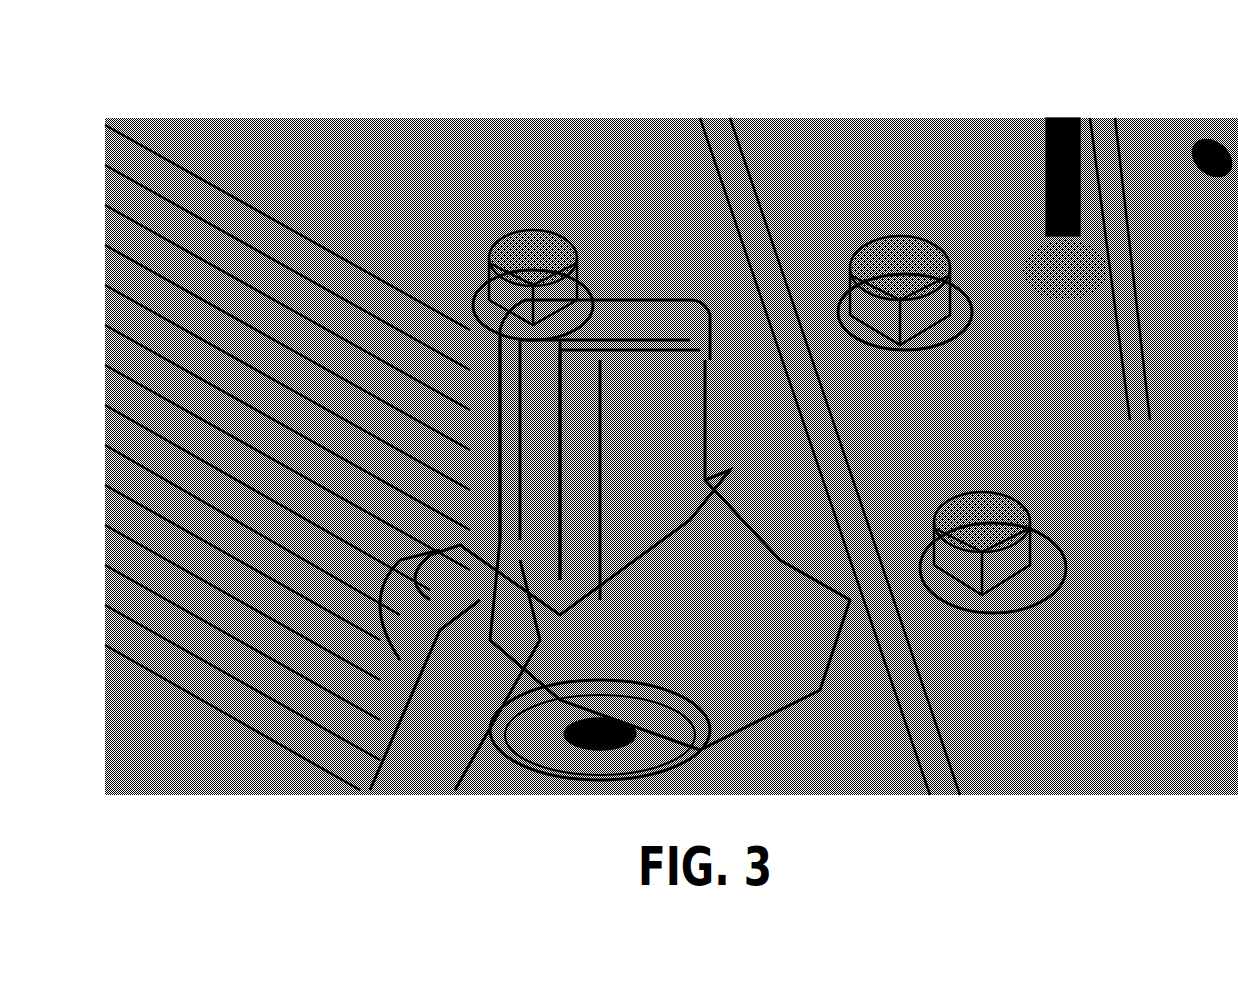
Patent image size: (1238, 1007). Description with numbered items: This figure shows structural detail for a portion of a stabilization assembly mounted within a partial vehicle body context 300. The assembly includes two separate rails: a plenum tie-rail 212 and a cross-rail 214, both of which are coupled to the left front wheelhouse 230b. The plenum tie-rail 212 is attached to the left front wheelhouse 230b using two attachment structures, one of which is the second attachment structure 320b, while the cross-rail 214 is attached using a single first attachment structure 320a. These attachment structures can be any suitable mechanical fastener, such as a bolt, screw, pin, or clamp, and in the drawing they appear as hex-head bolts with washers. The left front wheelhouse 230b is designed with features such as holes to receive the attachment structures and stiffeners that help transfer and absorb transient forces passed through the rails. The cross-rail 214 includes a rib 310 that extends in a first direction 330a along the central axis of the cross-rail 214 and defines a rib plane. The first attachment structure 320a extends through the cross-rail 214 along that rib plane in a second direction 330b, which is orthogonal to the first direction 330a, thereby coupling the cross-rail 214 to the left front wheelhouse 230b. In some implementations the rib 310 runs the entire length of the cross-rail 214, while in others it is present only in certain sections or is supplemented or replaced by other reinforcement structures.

The partial vehicle body context 300 is at (200, 70).
The rib 310 is at (620, 428).
The first attachment structure 320a is at (530, 255).
The second attachment structure 320b is at (918, 255).
The plenum tie-rail 212 is at (832, 246).
The cross-rail 214 is at (346, 366).
The left front wheelhouse 230b is at (1016, 722).
The first direction 330a is at (413, 278).
The second direction 330b is at (555, 415).